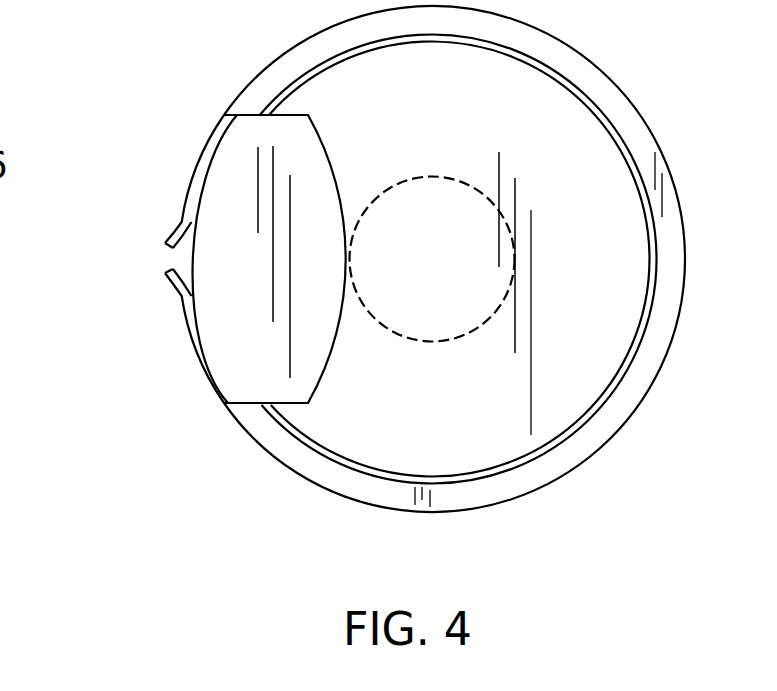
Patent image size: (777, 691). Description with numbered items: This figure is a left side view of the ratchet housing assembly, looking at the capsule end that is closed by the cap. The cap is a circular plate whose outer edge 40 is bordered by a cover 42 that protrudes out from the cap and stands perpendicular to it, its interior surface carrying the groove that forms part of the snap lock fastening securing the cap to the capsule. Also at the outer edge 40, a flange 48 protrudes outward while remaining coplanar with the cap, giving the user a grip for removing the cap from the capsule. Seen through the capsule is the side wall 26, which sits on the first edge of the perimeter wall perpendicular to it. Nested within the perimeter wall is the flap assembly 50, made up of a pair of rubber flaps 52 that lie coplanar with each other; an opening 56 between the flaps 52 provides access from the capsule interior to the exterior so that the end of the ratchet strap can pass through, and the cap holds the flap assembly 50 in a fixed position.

The side wall 26 is at (575, 365).
The outer edge 40 is at (0, 8).
The cover 42 is at (653, 227).
The flange 48 is at (660, 302).
The flap assembly 50 is at (265, 368).
The flaps 52 is at (188, 190).
The opening 56 is at (167, 255).